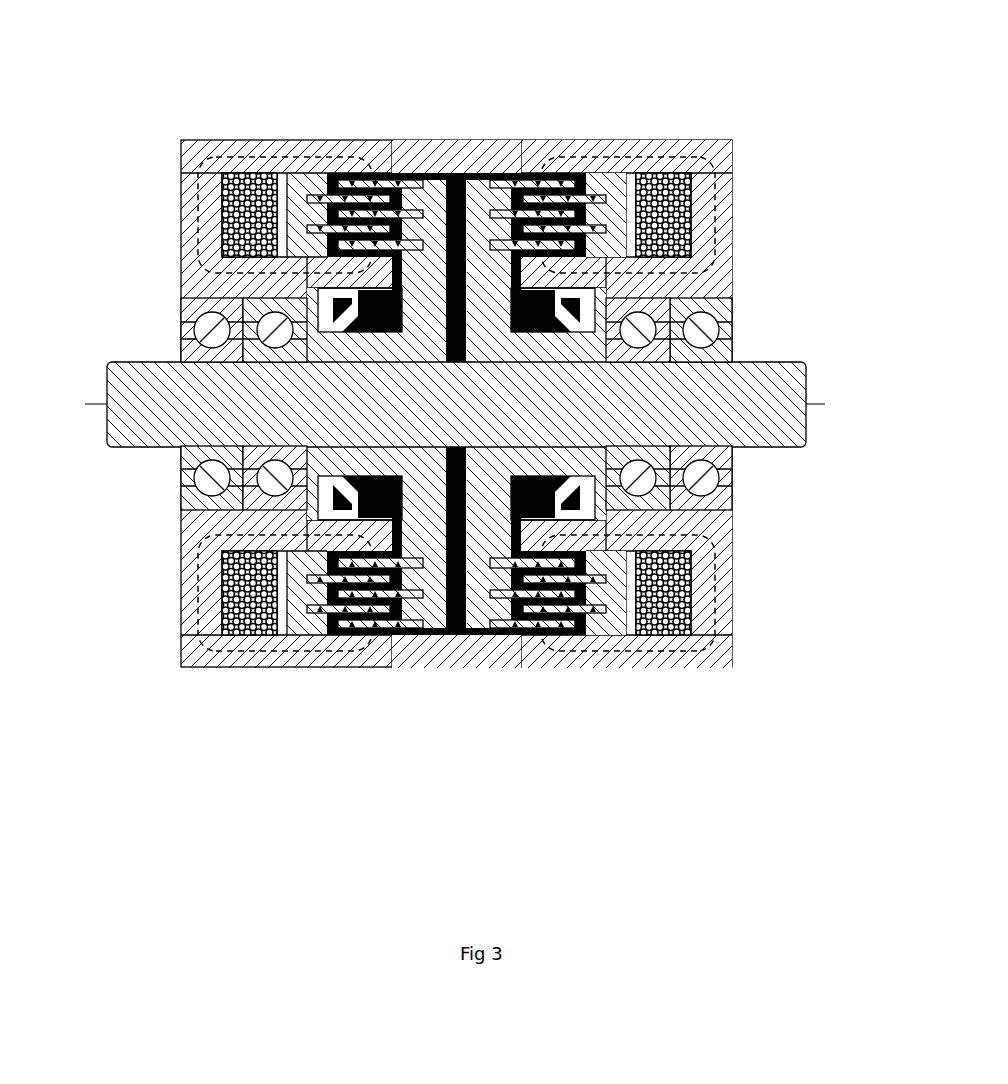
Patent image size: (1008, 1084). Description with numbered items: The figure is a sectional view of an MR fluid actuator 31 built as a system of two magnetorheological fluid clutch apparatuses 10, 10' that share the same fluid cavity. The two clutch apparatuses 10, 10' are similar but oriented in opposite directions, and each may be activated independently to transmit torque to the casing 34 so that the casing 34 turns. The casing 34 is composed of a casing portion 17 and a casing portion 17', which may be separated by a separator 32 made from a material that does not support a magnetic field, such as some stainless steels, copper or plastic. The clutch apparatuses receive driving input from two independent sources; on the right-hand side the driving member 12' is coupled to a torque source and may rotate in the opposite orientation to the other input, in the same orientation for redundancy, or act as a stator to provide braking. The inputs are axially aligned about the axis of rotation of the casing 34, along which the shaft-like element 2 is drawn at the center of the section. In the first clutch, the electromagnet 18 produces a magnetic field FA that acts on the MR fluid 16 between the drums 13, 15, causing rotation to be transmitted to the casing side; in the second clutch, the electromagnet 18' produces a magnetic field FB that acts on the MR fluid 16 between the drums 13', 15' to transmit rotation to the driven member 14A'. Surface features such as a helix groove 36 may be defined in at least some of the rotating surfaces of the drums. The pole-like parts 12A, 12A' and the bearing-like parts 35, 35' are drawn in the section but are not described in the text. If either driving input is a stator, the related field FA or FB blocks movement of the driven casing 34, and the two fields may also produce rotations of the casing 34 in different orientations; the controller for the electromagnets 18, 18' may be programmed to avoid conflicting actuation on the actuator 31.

The shaft 2 is at (142, 362).
The MR fluid clutch apparatus 10 is at (48, 295).
The MR fluid clutch apparatus 10' is at (875, 278).
The driving member 12' is at (780, 303).
The rotor pole piece 12A is at (376, 350).
The rotor pole piece 12A' is at (523, 346).
The drum 13 is at (365, 477).
The drum 13' is at (548, 474).
The driven member 14A' is at (599, 348).
The drum 15 is at (327, 648).
The drum 15' is at (611, 655).
The MR fluid 16 is at (503, 625).
The casing portion 17 is at (438, 355).
The casing portion 17' is at (604, 362).
The electromagnet 18 is at (249, 345).
The electromagnet 18' is at (663, 351).
The MR fluid actuator 31 is at (847, 117).
The separator 32 is at (435, 143).
The casing 34 is at (335, 137).
The ball bearing 35 is at (196, 433).
The ball bearing 35' is at (725, 420).
The helix groove 36 is at (395, 216).
The magnetic field FA is at (188, 205).
The magnetic field FB is at (710, 210).